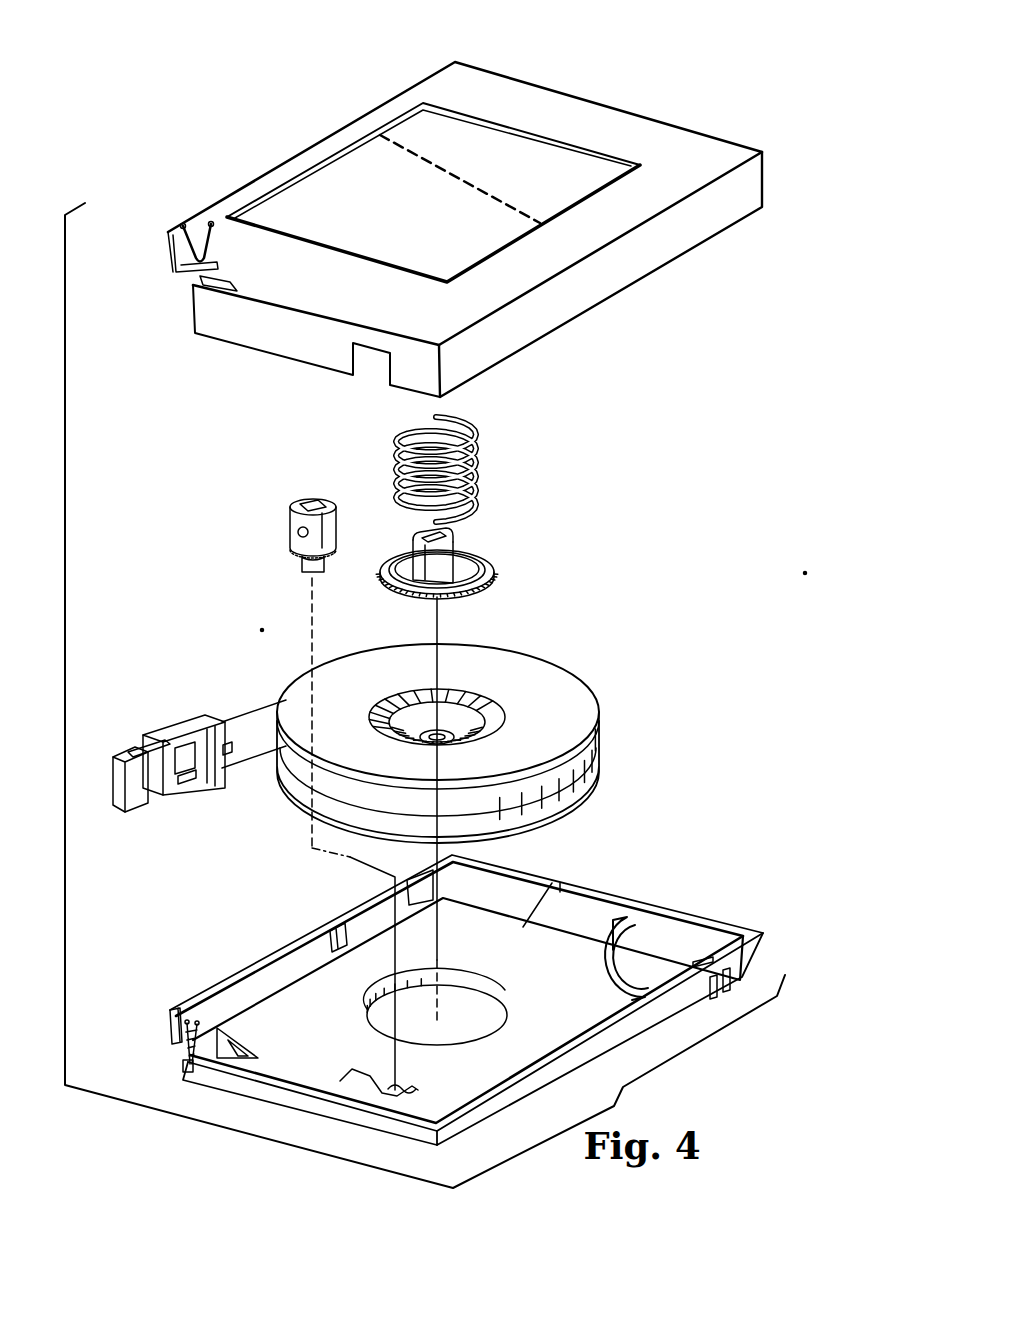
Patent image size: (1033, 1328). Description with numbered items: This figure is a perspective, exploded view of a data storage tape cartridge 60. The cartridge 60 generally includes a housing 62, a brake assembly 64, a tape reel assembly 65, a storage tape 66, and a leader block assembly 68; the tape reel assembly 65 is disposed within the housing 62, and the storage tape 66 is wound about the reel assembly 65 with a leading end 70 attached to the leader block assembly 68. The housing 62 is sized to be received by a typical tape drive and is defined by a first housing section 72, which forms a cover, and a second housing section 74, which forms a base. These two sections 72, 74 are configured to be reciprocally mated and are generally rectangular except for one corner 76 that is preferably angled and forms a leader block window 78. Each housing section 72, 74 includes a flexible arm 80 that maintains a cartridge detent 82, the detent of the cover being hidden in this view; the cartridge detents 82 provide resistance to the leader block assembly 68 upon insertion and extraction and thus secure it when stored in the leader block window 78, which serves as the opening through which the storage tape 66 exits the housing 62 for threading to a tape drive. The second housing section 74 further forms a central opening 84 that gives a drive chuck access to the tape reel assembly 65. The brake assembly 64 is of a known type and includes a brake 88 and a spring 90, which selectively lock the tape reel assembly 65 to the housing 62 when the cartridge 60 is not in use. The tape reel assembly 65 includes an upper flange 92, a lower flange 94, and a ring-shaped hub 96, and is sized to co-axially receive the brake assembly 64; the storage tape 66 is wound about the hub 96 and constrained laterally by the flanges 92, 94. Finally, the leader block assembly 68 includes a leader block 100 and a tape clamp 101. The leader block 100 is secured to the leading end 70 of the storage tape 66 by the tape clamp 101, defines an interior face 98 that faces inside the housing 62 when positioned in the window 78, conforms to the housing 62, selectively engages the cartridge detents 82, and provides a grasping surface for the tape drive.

The data storage tape cartridge 60 is at (730, 80).
The housing 62 is at (726, 125).
The brake assembly 64 is at (570, 415).
The tape reel assembly 65 is at (682, 655).
The storage tape 66 is at (250, 711).
The leader block assembly 68 is at (160, 692).
The leading end 70 is at (223, 720).
The first housing section 72 is at (561, 89).
The second housing section 74 is at (688, 904).
The corner 76 is at (172, 257).
The leader block window 78 is at (170, 1045).
The flexible arm 80 is at (197, 241).
The cartridge detent 82 is at (178, 1055).
The central opening 84 is at (480, 993).
The brake 88 is at (496, 578).
The spring 90 is at (470, 463).
The upper flange 92 is at (581, 708).
The lower flange 94 is at (599, 751).
The hub 96 is at (458, 690).
The interior face 98 is at (142, 790).
The leader block 100 is at (127, 752).
The tape clamp 101 is at (224, 748).